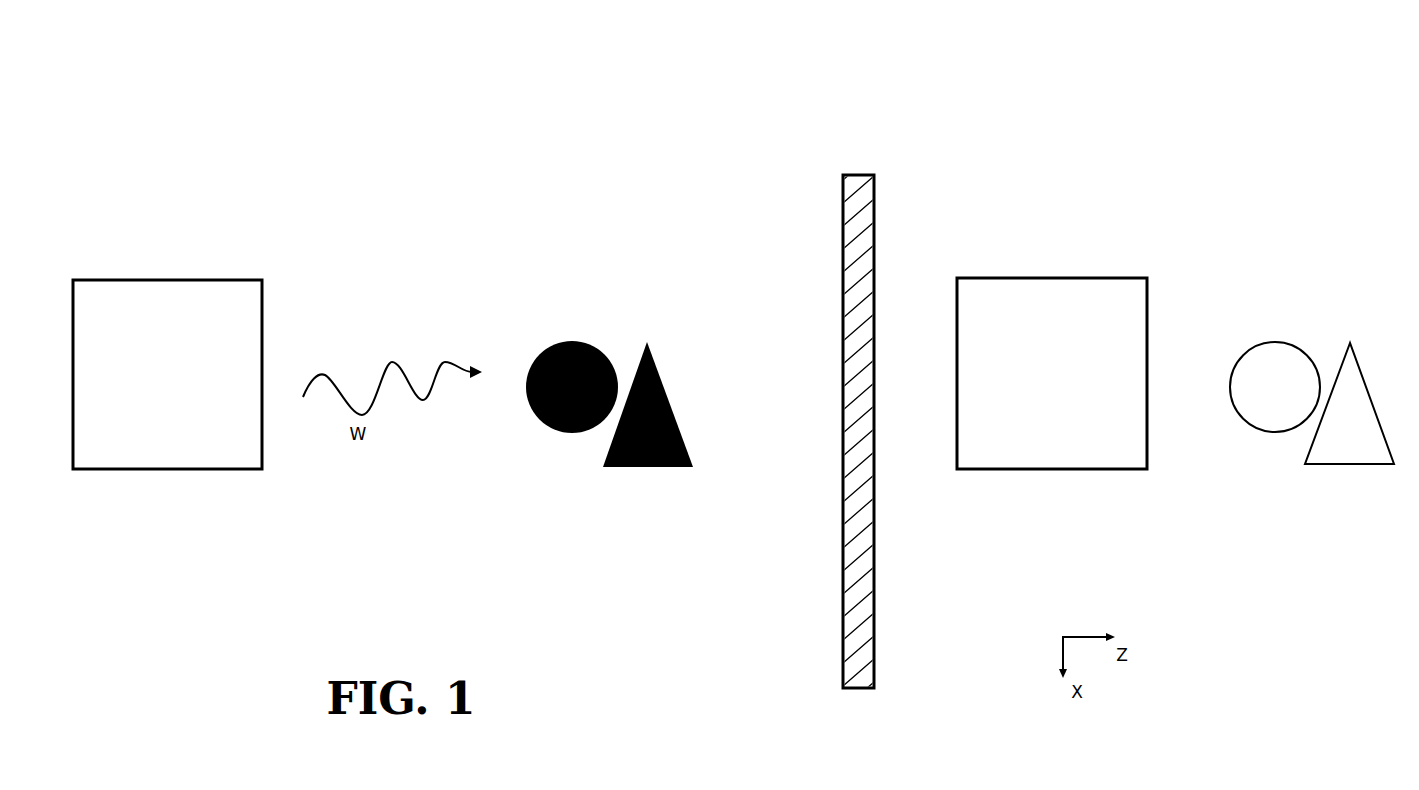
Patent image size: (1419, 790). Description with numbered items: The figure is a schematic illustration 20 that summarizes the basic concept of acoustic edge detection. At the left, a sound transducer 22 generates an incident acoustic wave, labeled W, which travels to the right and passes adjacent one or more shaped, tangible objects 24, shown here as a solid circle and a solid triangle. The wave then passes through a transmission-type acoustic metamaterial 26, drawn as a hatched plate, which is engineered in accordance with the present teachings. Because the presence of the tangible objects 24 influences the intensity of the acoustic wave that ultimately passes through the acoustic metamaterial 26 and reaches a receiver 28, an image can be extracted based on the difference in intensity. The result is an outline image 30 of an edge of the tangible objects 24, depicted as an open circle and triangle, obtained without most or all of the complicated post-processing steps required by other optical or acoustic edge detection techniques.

The schematic illustration 20 is at (1079, 75).
The sound transducer 22 is at (155, 385).
The tangible objects 24 is at (560, 432).
The transmission-type acoustic metamaterial 26 is at (842, 638).
The receiver 28 is at (1040, 387).
The outline image 30 is at (1343, 360).